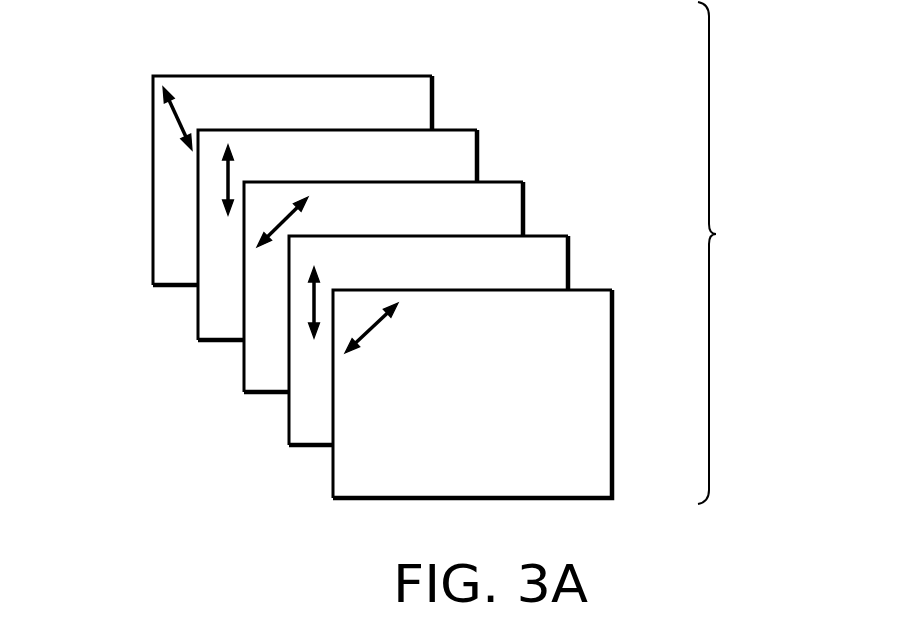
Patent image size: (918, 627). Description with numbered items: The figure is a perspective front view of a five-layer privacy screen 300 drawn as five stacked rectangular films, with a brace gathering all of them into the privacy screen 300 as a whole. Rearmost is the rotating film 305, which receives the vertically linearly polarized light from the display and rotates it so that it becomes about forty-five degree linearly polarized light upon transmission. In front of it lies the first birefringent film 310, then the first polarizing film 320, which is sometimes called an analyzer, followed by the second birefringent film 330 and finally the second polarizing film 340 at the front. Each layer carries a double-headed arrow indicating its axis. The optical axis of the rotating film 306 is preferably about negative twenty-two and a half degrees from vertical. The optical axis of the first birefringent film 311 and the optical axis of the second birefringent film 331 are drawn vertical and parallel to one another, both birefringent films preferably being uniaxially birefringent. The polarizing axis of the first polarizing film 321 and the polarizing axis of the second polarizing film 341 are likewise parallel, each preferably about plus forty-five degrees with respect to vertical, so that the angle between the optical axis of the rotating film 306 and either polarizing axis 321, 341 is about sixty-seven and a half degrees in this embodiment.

The privacy screen 300 is at (734, 253).
The rotating film 305 is at (153, 141).
The optical axis of the rotating film 306 is at (180, 130).
The first birefringent film 310 is at (198, 237).
The optical axis of the first birefringent film 311 is at (228, 180).
The first polarizing film 320 is at (244, 378).
The polarizing axis of the first polarizing film 321 is at (282, 218).
The second birefringent film 330 is at (289, 432).
The optical axis of the second birefringent film 331 is at (314, 310).
The second polarizing film 340 is at (333, 487).
The polarizing axis of the second polarizing film 341 is at (371, 320).